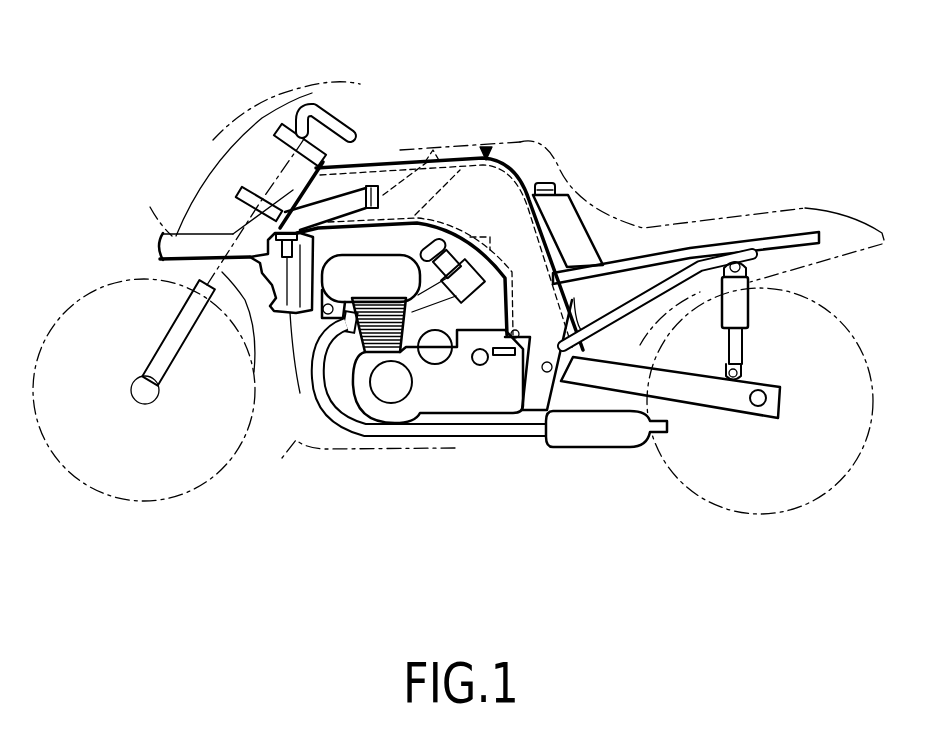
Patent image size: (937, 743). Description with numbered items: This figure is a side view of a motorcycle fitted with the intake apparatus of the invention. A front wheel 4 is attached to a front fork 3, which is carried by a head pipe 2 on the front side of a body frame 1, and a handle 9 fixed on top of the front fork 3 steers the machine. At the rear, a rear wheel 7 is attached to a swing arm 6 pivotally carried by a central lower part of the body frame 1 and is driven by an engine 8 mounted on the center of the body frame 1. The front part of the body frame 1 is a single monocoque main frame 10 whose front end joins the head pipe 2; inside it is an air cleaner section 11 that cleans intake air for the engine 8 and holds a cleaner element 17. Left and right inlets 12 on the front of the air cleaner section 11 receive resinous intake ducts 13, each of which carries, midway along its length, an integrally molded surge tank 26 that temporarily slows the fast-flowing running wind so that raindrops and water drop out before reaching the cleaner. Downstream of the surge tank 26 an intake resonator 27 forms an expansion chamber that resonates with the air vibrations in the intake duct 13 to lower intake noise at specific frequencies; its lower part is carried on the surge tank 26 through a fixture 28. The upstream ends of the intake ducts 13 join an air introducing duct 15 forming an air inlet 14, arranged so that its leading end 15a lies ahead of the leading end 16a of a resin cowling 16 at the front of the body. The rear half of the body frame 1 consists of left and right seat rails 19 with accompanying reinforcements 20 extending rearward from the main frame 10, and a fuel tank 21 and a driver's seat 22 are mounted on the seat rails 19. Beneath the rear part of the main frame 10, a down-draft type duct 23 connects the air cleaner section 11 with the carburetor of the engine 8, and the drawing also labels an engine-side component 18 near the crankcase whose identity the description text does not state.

The body frame 1 is at (486, 148).
The head pipe 2 is at (273, 172).
The front fork 3 is at (157, 338).
The front wheel 4 is at (58, 306).
The swing arm 6 is at (693, 390).
The rear wheel 7 is at (858, 323).
The engine 8 is at (353, 347).
The handle 9 is at (357, 123).
The main frame 10 is at (403, 158).
The air cleaner section 11 is at (470, 240).
The inlets 12 is at (384, 186).
The intake ducts 13 is at (286, 127).
The air inlet 14 is at (158, 247).
The air introducing duct 15 is at (187, 233).
The leading end 15a is at (160, 234).
The cowling 16 is at (212, 132).
The leading end 16a is at (152, 208).
The cleaner element 17 is at (438, 170).
The carburetor 18 is at (456, 300).
The seat rails 19 is at (684, 252).
The reinforcements 20 is at (629, 330).
The fuel tank 21 is at (572, 214).
The driver's seat 22 is at (758, 203).
The down-draft type duct 23 is at (510, 190).
The surge tank 26 is at (254, 372).
The intake resonator 27 is at (305, 312).
The fixture 28 is at (267, 312).